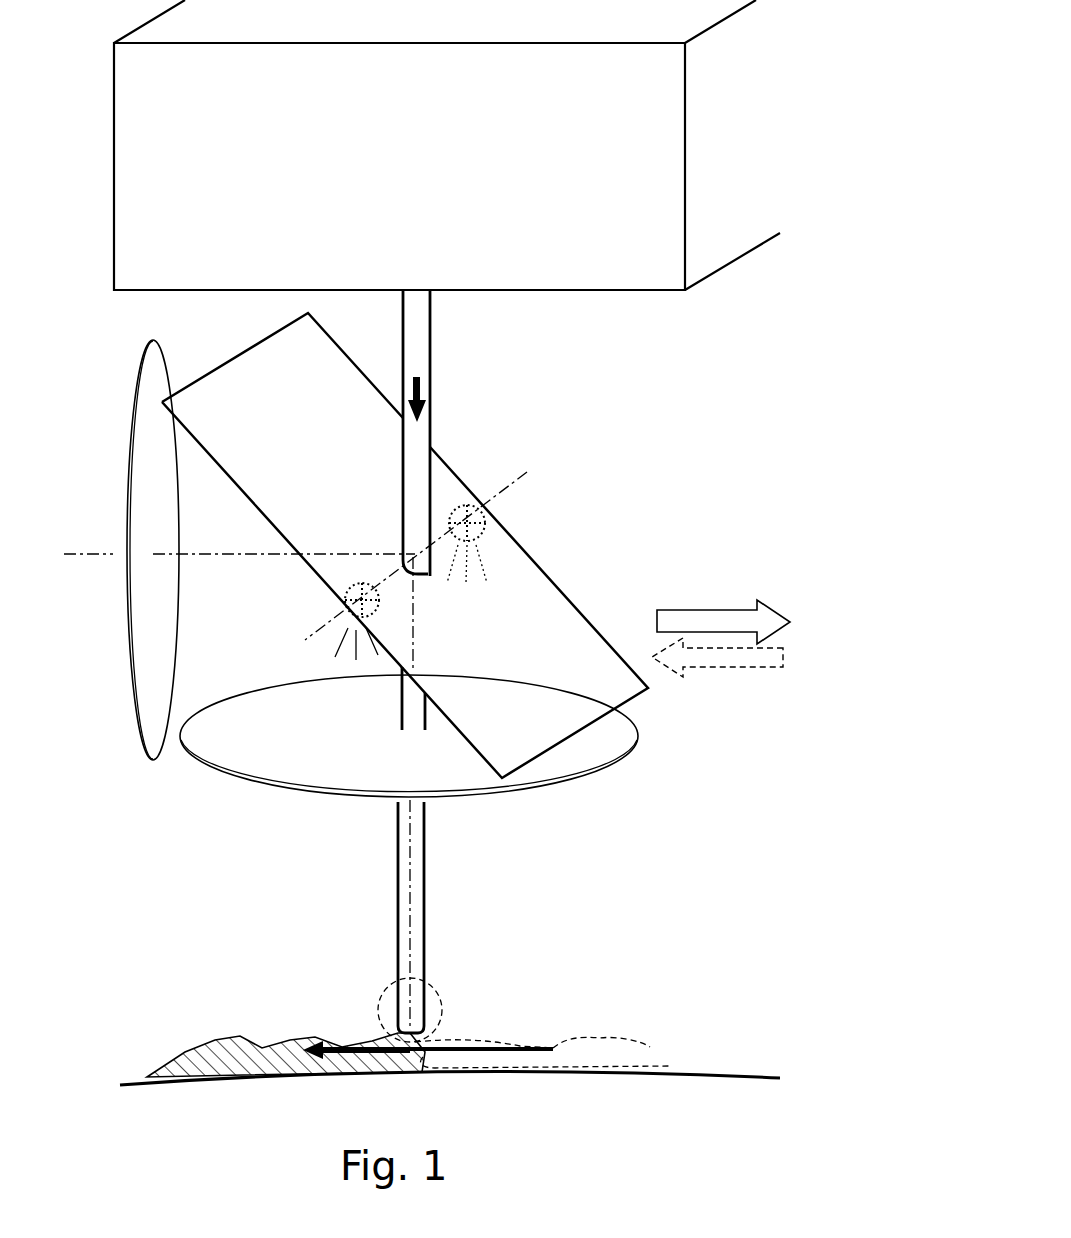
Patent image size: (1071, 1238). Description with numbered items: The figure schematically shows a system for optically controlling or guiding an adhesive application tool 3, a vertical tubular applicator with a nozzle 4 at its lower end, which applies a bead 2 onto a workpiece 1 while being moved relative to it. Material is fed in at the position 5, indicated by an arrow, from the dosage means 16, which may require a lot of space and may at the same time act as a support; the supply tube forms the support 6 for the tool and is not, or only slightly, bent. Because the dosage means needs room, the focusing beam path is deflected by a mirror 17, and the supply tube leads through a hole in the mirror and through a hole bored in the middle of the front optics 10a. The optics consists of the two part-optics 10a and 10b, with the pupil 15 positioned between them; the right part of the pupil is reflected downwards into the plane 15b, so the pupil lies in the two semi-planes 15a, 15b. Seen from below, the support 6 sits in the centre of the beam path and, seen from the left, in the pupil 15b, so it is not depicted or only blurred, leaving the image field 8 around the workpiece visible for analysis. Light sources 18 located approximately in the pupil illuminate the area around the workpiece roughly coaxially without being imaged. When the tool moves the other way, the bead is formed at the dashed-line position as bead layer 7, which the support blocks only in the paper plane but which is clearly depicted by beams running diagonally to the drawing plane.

The workpiece 1 is at (169, 1092).
The bead 2 is at (262, 1075).
The tool 3 is at (441, 856).
The nozzle 4 is at (455, 998).
The material supply position 5 is at (440, 362).
The support 6 is at (382, 699).
The bead layer 7 is at (586, 1060).
The image field 8 is at (490, 1066).
The front optics 10a is at (592, 800).
The part-optics 10b is at (151, 778).
The pupil 15 is at (522, 470).
The semi-plane of the pupil 15a is at (345, 545).
The pupil plane 15b is at (426, 633).
The dosage means 16 is at (666, 304).
The mirror 17 is at (567, 580).
The light sources 18 is at (333, 592).